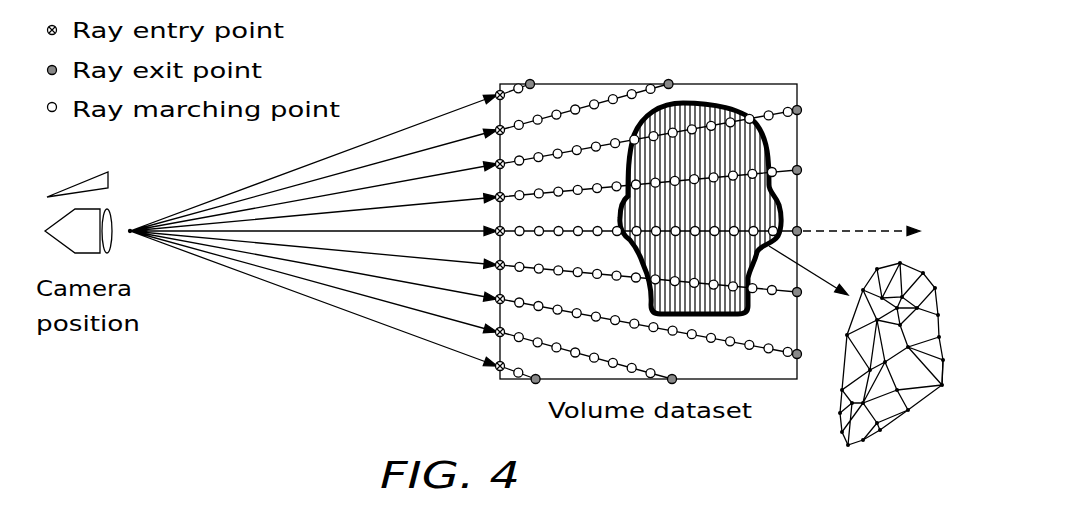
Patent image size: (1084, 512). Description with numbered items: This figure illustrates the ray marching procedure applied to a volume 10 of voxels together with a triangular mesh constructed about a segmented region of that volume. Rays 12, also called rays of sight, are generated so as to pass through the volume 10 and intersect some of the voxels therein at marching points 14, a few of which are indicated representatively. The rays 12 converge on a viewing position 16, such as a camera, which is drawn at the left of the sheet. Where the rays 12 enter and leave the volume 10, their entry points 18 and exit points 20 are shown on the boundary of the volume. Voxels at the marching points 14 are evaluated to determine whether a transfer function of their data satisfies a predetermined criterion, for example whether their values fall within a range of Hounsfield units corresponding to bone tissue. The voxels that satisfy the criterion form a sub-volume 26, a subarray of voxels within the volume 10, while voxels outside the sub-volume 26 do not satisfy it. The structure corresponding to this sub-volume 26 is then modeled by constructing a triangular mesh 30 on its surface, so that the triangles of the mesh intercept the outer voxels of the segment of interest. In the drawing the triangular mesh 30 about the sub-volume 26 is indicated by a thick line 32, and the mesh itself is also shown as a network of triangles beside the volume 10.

The volume 10 is at (784, 84).
The rays 12 is at (318, 338).
The marching points 14 is at (543, 265).
The viewing position 16 is at (130, 228).
The entry points 18 is at (495, 131).
The exit points 20 is at (676, 82).
The sub-volume 26 is at (769, 146).
The triangular mesh 30 is at (923, 398).
The thick line 32 is at (709, 103).